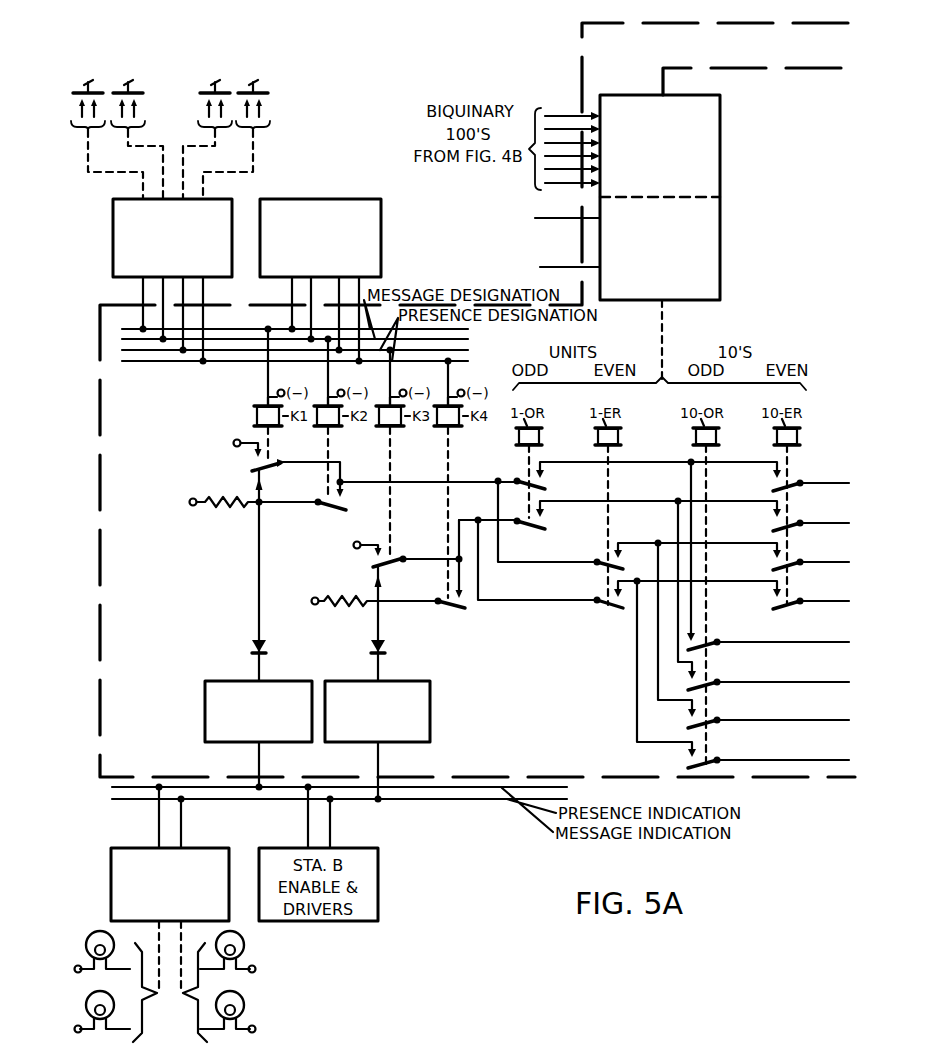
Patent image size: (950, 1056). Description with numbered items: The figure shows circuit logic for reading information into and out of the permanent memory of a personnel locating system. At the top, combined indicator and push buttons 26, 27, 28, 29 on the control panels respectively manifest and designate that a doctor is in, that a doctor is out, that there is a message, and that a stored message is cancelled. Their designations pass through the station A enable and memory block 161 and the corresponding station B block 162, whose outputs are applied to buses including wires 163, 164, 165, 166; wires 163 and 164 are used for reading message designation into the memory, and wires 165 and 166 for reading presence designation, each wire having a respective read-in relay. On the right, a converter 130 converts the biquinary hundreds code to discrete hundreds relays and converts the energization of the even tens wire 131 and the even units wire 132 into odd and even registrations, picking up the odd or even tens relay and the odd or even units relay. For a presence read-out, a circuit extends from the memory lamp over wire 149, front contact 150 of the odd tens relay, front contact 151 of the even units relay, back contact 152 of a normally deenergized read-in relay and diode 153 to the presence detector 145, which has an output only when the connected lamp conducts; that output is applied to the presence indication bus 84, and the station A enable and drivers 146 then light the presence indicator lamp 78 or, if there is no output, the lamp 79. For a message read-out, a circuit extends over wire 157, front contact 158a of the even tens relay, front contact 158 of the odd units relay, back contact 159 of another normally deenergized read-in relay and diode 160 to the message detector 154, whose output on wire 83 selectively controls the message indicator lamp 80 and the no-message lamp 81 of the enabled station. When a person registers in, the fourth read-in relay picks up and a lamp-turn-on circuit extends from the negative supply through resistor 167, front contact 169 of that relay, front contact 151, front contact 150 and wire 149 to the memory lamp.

The combined indicator and push button 26 is at (236, 129).
The combined indicator and push button 27 is at (207, 129).
The combined indicator and push button 28 is at (137, 129).
The combined indicator and push button 29 is at (107, 129).
The station A enable and memory block 161 is at (205, 198).
The station B enable and memory block 162 is at (320, 199).
The bus wire 163 is at (209, 313).
The bus wire 164 is at (237, 338).
The bus wire 165 is at (144, 352).
The bus wire 166 is at (252, 362).
The converter 130 is at (712, 96).
The even tens wire 131 is at (578, 266).
The even units wire 132 is at (578, 219).
The back contact of relay K4 159 is at (272, 466).
The diode 160 is at (253, 650).
The back contact of relay K2 152 is at (385, 556).
The resistor 167 is at (338, 595).
The front contact of relay K4 169 is at (466, 610).
The diode 153 is at (372, 652).
The front contact of relay 1-OR 158 is at (542, 489).
The front contact of relay 10-ER 158a is at (793, 477).
The wire 157 is at (802, 485).
The front contact of relay 1-ER 151 is at (616, 606).
The front contact of relay 10-OR 150 is at (712, 762).
The wire 149 is at (773, 760).
The message detector 154 is at (205, 726).
The presence detector 145 is at (430, 724).
The message indication wire 83 is at (488, 787).
The presence indication bus 84 is at (435, 800).
The station A enable and drivers 146 is at (140, 848).
The message indicator lamp 80 is at (86, 945).
The indicator lamp 81 is at (86, 1005).
The presence indicator lamp 78 is at (245, 945).
The lamp 79 is at (245, 1005).